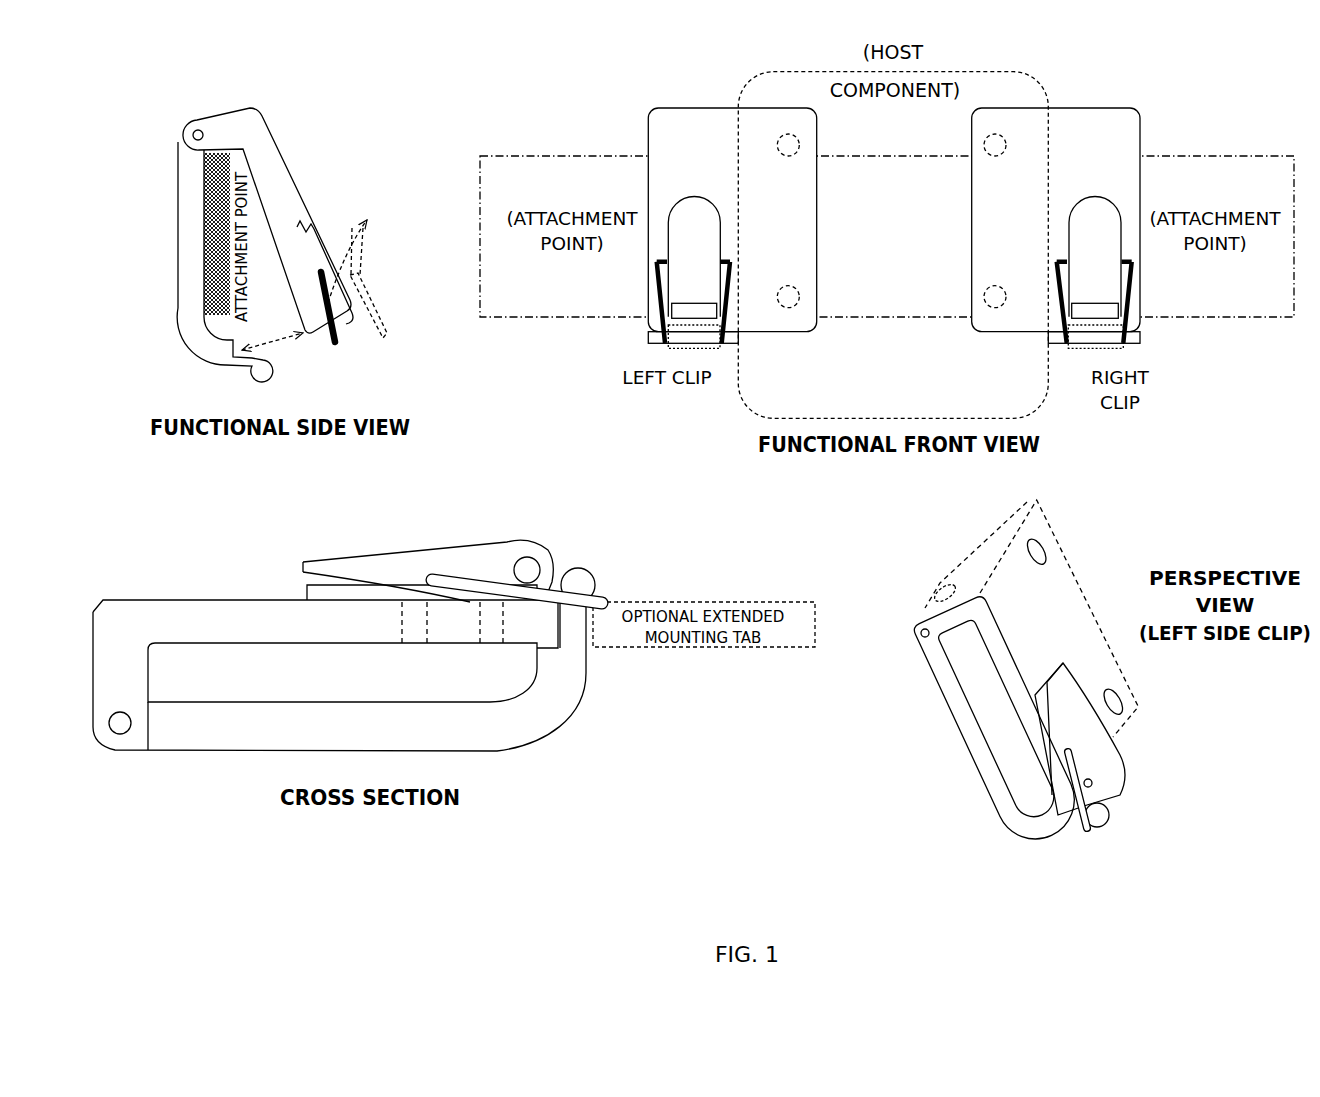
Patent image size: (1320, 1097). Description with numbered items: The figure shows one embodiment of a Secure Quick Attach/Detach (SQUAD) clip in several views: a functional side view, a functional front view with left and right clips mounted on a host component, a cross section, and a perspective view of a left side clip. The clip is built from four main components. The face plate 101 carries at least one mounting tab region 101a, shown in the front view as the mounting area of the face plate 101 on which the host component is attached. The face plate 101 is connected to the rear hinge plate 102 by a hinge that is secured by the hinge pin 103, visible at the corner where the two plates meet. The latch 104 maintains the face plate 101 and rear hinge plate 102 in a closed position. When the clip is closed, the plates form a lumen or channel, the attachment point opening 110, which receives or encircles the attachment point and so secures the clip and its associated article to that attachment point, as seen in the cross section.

The face plate 101 is at (266, 145).
The mounting tab region 101a is at (970, 222).
The rear hinge plate 102 is at (196, 220).
The hinge pin 103 is at (192, 135).
The latch 104 is at (315, 257).
The attachment point opening 110 is at (342, 672).